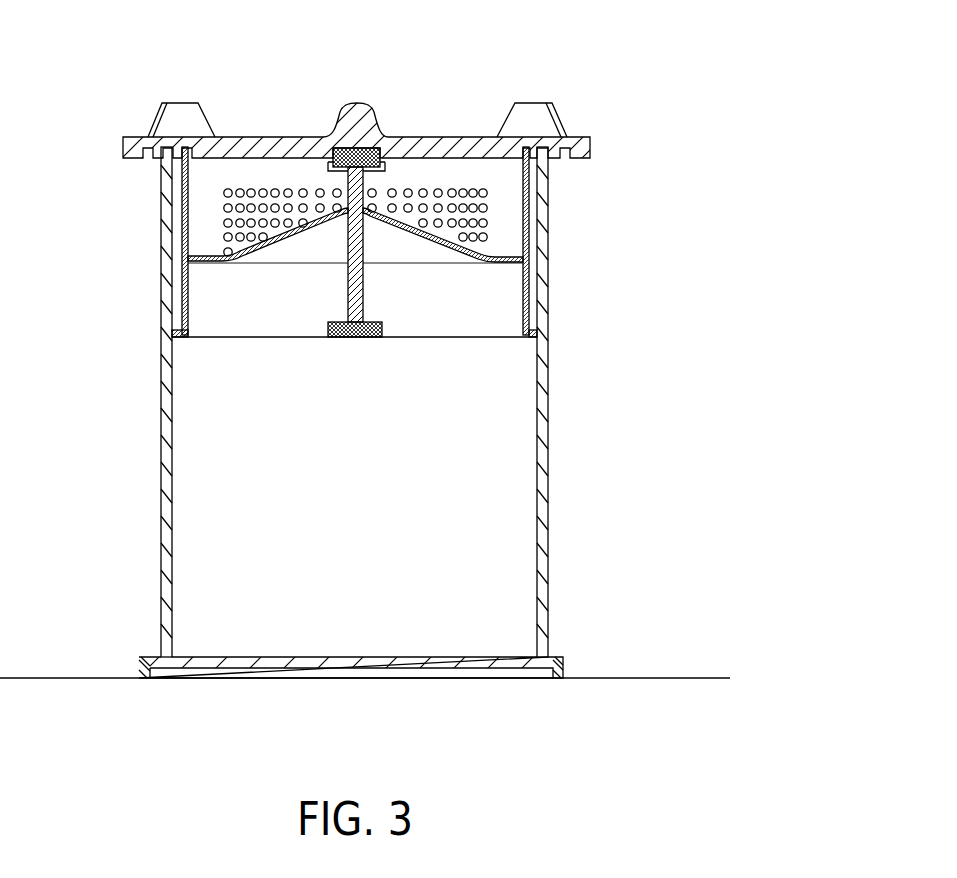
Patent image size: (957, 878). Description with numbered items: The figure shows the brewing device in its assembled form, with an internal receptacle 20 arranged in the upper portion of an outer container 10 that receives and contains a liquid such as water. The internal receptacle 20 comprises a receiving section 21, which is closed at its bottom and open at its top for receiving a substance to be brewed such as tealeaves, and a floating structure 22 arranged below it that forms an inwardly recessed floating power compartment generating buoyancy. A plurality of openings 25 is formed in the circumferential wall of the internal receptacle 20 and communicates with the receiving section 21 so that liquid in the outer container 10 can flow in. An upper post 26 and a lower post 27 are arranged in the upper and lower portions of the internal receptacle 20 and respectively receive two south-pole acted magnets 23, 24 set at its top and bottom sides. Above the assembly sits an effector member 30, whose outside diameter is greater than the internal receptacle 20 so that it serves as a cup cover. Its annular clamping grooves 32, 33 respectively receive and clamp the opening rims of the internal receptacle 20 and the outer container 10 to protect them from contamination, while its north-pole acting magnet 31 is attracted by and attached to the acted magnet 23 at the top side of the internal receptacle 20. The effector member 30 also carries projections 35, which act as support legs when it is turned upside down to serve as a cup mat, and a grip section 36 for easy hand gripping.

The outer container 10 is at (547, 380).
The internal receptacle 20 is at (540, 255).
The receiving section 21 is at (497, 220).
The floating structure 22 is at (460, 272).
The acted magnet 23 is at (328, 163).
The acted magnet 24 is at (368, 338).
The openings 25 is at (484, 192).
The upper post 26 is at (385, 178).
The lower post 27 is at (360, 290).
The effector member 30 is at (122, 126).
The acting magnet 31 is at (326, 158).
The annular clamping groove 32 is at (188, 137).
The annular clamping groove 33 is at (170, 137).
The projections 35 is at (558, 118).
The grip section 36 is at (355, 105).